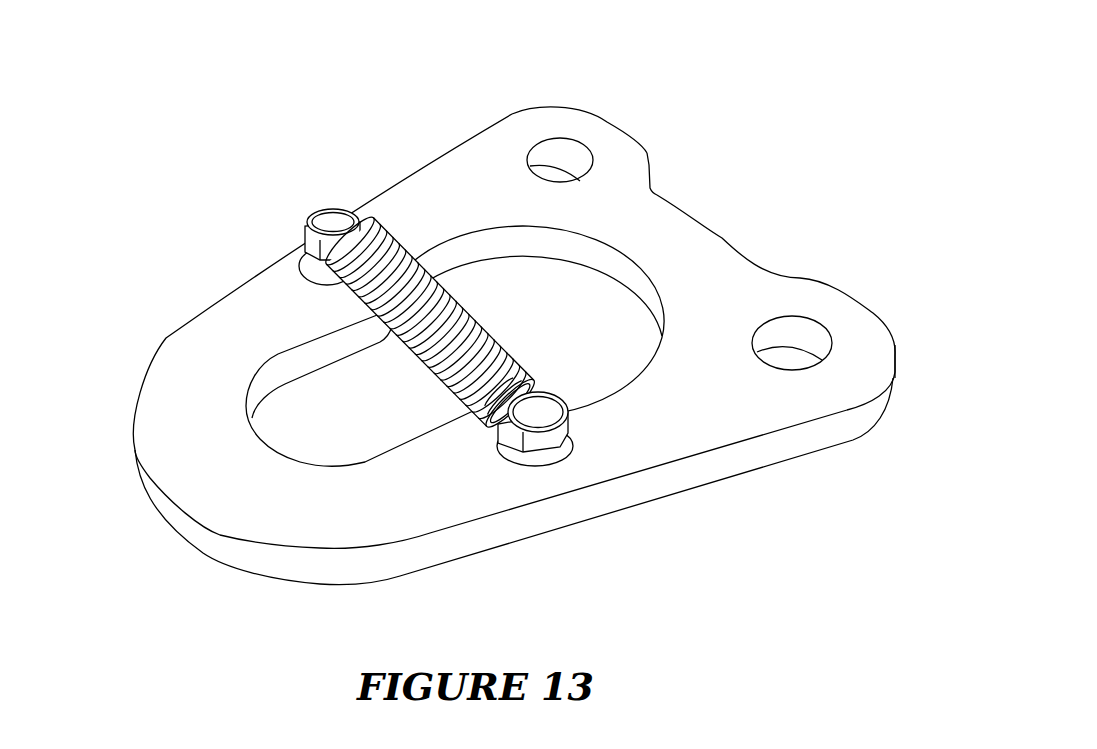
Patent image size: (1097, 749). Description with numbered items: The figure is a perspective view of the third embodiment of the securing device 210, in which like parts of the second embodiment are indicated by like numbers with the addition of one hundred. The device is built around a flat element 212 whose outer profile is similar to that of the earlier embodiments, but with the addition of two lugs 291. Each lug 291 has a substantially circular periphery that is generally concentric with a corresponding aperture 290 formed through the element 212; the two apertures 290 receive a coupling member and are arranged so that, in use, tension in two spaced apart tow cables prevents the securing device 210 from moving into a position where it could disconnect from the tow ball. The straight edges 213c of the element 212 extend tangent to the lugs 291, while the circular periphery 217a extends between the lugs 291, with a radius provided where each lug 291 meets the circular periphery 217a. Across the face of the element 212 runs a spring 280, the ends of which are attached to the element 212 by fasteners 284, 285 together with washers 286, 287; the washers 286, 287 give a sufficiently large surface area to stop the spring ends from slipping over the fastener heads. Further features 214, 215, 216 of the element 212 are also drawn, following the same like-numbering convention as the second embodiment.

The securing device 210 is at (828, 96).
The element 212 is at (177, 360).
The straight edges 213c is at (200, 310).
The recess floor 214 is at (283, 435).
The recess 215 is at (580, 298).
The recess wall 216 is at (360, 403).
The circular periphery 217a is at (727, 240).
The spring 280 is at (367, 223).
The fastener 284 is at (317, 217).
The fastener 285 is at (572, 432).
The washer 286 is at (304, 262).
The washer 287 is at (552, 462).
The aperture 290 is at (588, 148).
The lug 291 is at (650, 155).